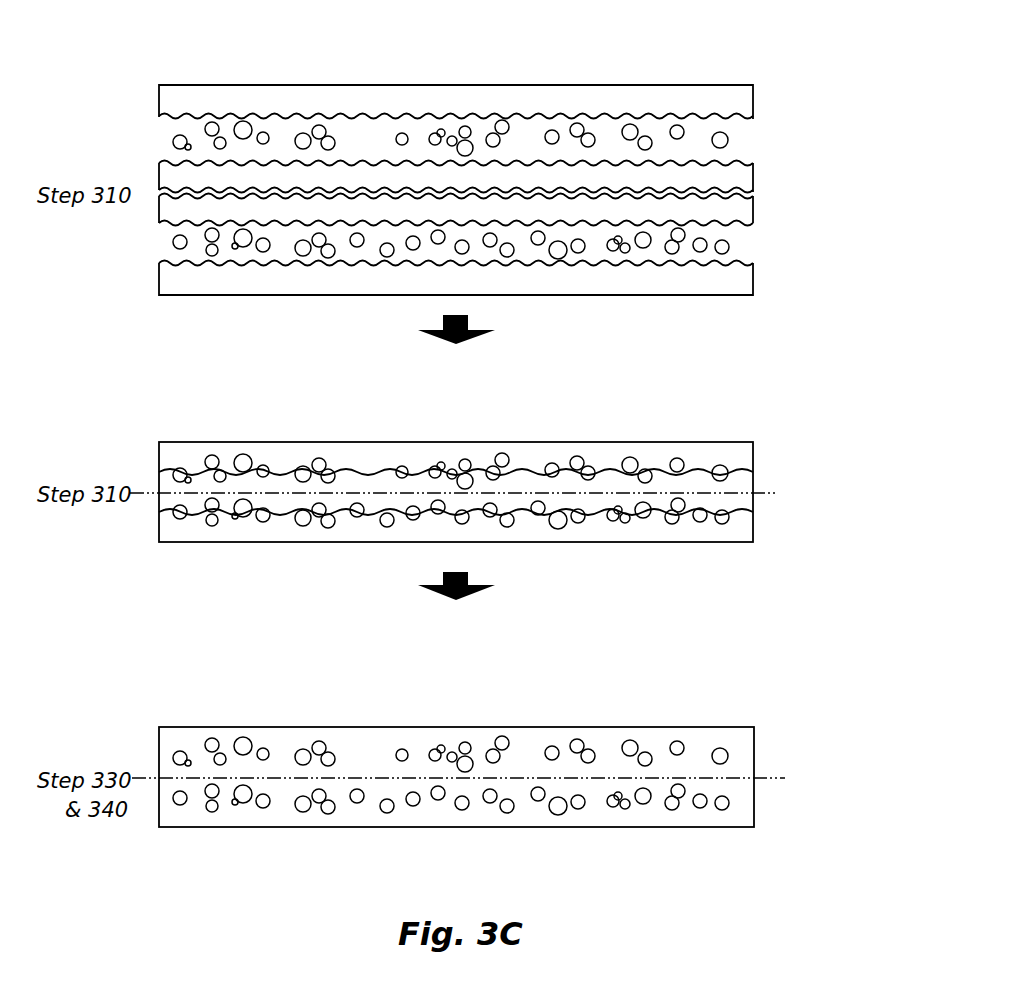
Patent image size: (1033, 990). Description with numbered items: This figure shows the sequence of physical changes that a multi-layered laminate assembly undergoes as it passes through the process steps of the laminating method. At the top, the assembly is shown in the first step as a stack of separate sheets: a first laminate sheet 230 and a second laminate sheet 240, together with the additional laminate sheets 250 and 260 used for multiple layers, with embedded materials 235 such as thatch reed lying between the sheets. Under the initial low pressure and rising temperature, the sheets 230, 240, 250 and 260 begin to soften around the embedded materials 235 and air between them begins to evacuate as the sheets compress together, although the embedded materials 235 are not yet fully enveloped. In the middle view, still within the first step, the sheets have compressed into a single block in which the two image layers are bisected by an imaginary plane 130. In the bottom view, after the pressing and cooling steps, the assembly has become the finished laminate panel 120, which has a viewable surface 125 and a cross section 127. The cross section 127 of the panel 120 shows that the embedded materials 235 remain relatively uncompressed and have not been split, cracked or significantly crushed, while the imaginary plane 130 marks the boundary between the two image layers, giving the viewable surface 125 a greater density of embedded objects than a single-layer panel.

The laminate panel 120 is at (865, 728).
The viewable surface 125 is at (708, 727).
The cross section 127 is at (750, 804).
The imaginary plane 130 is at (777, 493).
The first laminate sheet 230 is at (753, 280).
The embedded materials 235 is at (628, 132).
The second laminate sheet 240 is at (753, 212).
The laminate sheet 250 is at (753, 173).
The laminate sheet 260 is at (753, 102).